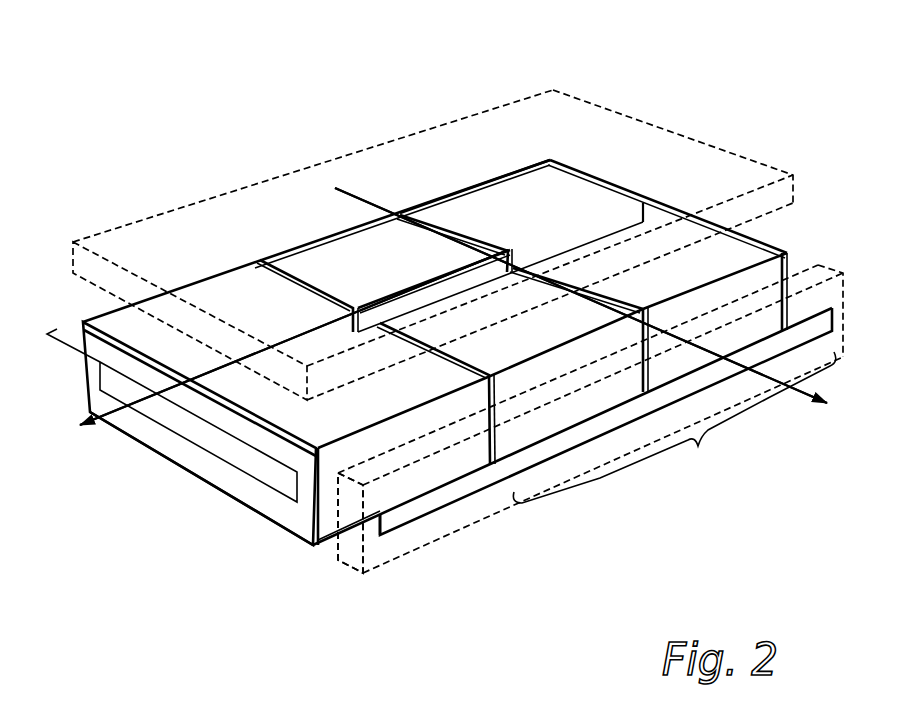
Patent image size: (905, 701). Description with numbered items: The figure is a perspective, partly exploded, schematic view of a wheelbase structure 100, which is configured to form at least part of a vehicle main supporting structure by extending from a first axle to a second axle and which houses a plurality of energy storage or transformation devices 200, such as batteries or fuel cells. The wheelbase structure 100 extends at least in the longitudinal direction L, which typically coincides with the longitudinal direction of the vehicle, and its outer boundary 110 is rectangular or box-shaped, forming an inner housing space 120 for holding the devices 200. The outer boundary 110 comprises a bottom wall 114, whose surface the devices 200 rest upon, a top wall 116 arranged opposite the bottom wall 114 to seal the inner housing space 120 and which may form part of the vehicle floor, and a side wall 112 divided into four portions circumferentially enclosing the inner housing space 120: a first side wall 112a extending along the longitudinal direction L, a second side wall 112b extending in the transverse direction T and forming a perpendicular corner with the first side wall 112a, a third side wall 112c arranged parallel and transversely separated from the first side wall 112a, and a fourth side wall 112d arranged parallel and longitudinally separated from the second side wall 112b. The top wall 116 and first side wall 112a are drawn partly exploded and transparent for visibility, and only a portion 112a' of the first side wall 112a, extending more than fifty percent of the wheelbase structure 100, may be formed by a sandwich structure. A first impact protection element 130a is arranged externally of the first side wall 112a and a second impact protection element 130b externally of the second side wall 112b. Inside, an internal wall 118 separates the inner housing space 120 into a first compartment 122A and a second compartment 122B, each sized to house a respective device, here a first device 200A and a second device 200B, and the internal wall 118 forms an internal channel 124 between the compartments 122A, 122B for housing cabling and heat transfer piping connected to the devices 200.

The wheelbase structure 100 is at (209, 126).
The outer boundary 110 is at (644, 529).
The side wall 112 is at (118, 453).
The first side wall 112a is at (590, 429).
The portion of the first side wall 112a' is at (674, 427).
The second side wall 112b is at (193, 468).
The third side wall 112c is at (392, 203).
The second end wall 112d is at (672, 205).
The bottom wall 114 is at (301, 573).
The top wall 116 is at (163, 213).
The internal wall 118 is at (255, 360).
The inner housing space 120 is at (497, 257).
The first compartment 122A is at (163, 395).
The second compartment 122B is at (857, 222).
The internal channel 124 is at (729, 181).
The first impact protection element 130a is at (412, 513).
The second impact protection element 130b is at (268, 476).
The energy storage or transformation devices 200 is at (626, 153).
The first module 200A is at (527, 187).
The second module 200B is at (723, 262).
The longitudinal direction L is at (283, 351).
The transverse direction T is at (592, 306).